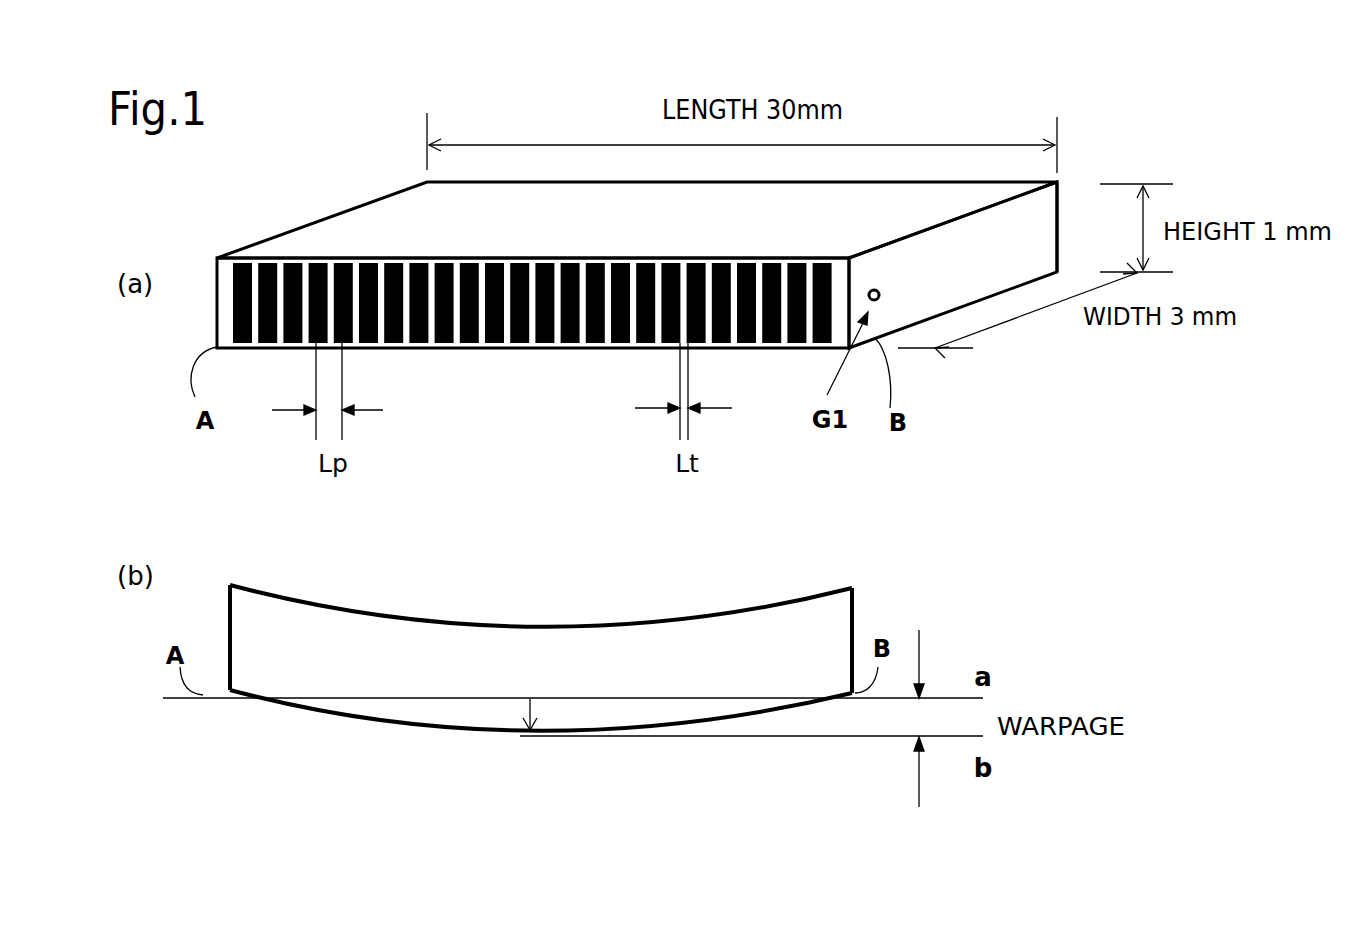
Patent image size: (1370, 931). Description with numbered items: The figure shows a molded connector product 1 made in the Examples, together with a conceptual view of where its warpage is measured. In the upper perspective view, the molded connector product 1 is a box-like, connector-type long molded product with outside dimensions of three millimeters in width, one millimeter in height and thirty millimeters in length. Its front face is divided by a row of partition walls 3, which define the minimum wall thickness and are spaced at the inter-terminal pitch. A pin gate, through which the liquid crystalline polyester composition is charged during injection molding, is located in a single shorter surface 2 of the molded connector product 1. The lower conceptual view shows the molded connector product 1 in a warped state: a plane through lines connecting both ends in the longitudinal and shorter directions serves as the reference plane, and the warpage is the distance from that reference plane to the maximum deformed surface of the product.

The molded connector product 1 is at (290, 232).
The shorter surface 2 is at (1047, 223).
The partition wall 3 is at (453, 341).